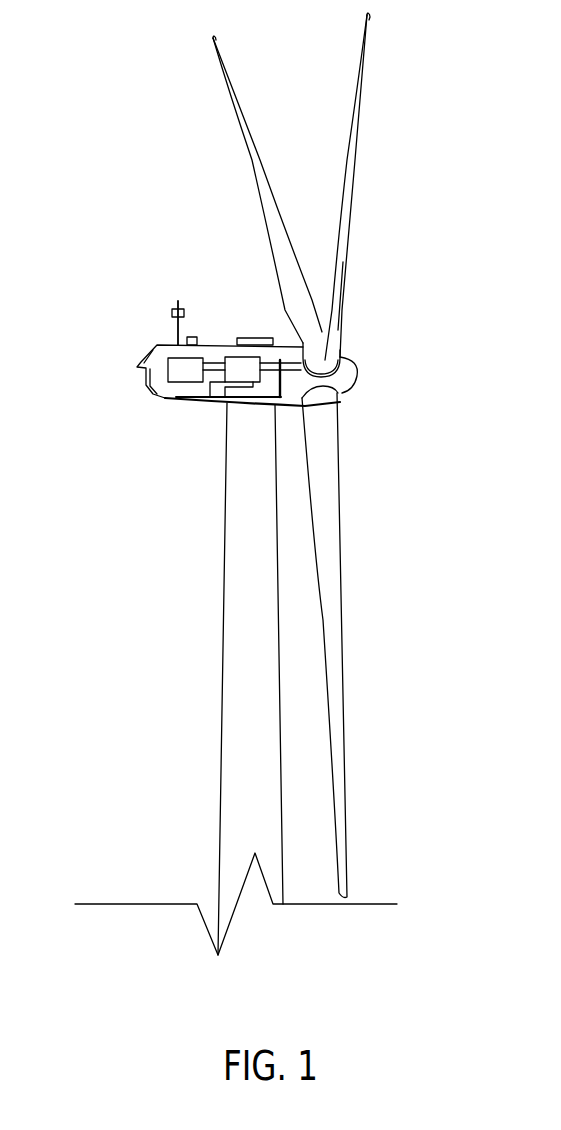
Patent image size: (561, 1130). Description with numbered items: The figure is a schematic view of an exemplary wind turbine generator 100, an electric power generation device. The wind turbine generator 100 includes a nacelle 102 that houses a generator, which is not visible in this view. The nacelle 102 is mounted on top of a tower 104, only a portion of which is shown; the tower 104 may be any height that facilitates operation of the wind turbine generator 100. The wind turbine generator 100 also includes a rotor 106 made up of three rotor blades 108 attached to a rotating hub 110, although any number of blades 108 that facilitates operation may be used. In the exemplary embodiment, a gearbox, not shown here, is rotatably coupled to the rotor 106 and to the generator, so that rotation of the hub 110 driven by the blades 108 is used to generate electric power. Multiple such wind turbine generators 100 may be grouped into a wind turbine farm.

The wind turbine generator 100 is at (125, 81).
The nacelle 102 is at (158, 412).
The tower 104 is at (223, 730).
The rotor 106 is at (384, 206).
The rotor blades 108 is at (252, 158).
The rotating hub 110 is at (352, 383).